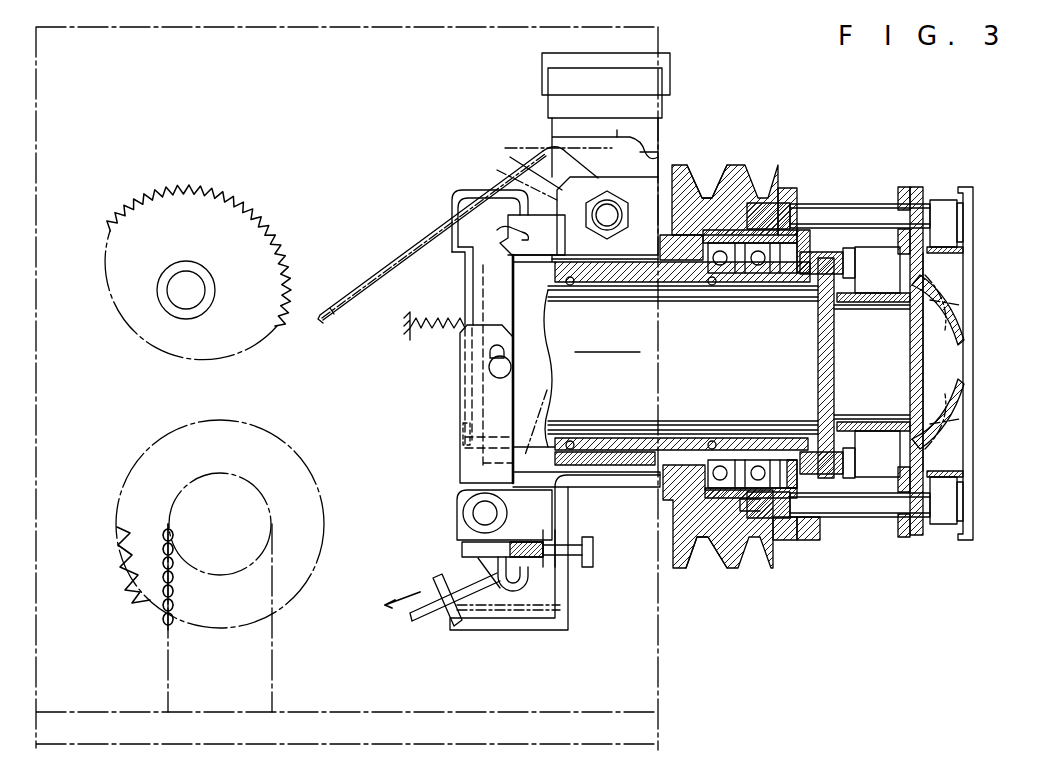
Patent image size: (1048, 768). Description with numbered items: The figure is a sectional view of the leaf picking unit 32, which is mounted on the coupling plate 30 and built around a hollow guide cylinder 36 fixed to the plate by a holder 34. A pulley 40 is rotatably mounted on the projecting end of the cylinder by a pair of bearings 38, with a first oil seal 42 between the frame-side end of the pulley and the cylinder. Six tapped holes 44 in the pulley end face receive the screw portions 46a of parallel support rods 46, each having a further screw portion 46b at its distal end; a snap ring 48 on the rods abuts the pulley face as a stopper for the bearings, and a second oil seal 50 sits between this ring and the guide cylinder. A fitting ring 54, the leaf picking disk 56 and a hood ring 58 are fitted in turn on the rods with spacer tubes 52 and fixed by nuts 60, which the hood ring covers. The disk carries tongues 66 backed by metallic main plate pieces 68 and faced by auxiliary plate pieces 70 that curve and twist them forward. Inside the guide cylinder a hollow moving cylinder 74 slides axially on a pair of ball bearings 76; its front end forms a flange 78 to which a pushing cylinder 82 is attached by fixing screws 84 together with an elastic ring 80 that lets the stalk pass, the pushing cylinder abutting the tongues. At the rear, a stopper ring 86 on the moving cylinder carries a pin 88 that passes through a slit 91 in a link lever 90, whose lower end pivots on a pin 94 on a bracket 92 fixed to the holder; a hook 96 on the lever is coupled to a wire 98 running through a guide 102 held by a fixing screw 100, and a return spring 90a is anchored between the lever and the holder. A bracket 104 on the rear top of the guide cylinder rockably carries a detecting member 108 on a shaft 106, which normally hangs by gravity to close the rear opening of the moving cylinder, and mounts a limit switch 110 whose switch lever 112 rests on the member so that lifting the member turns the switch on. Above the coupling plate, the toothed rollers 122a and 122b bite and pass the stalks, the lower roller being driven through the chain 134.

The coupling plate 30 is at (618, 712).
The leaf picking unit 32 is at (778, 145).
The holder 34 is at (662, 640).
The hollow guide cylinder 36 is at (640, 275).
The bearings 38 is at (760, 275).
The pulley 40 is at (720, 168).
The first oil seal 42 is at (658, 490).
The tapped holes 44 is at (750, 185).
The support rods 46 is at (855, 208).
The screw portions 46a is at (785, 215).
The screw portion 46b is at (973, 225).
The snap ring 48 is at (805, 530).
The second oil seal 50 is at (795, 275).
The spacer tubes 52 is at (902, 190).
The fitting ring 54 is at (918, 187).
The leaf picking disk 56 is at (931, 198).
The hood ring 58 is at (948, 200).
The nuts 60 is at (964, 212).
The tongues 66 is at (950, 345).
The main plate pieces 68 is at (905, 322).
The auxiliary plate pieces 70 is at (950, 310).
The hollow moving cylinder 74 is at (645, 438).
The bearings 76 is at (580, 290).
The flange 78 is at (830, 518).
The elastic ring 80 is at (818, 420).
The pushing cylinder 82 is at (880, 296).
The fixing screws 84 is at (850, 258).
The stopper ring 86 is at (465, 262).
The pin 88 is at (492, 372).
The link lever 90 is at (460, 375).
The return spring 90a is at (418, 312).
The slit 91 is at (492, 352).
The bracket 92 is at (558, 510).
The pin 94 is at (462, 513).
The hook 96 is at (514, 592).
The wire 98 is at (420, 620).
The fixing screw 100 is at (590, 567).
The guide 102 is at (572, 625).
The bracket 104 is at (536, 245).
The shaft 106 is at (495, 231).
The detecting member 108 is at (380, 262).
The limit switch 110 is at (662, 118).
The switch lever 112 is at (622, 148).
The toothed roller 122a is at (114, 226).
The toothed roller 122b is at (130, 585).
The chain 134 is at (166, 680).